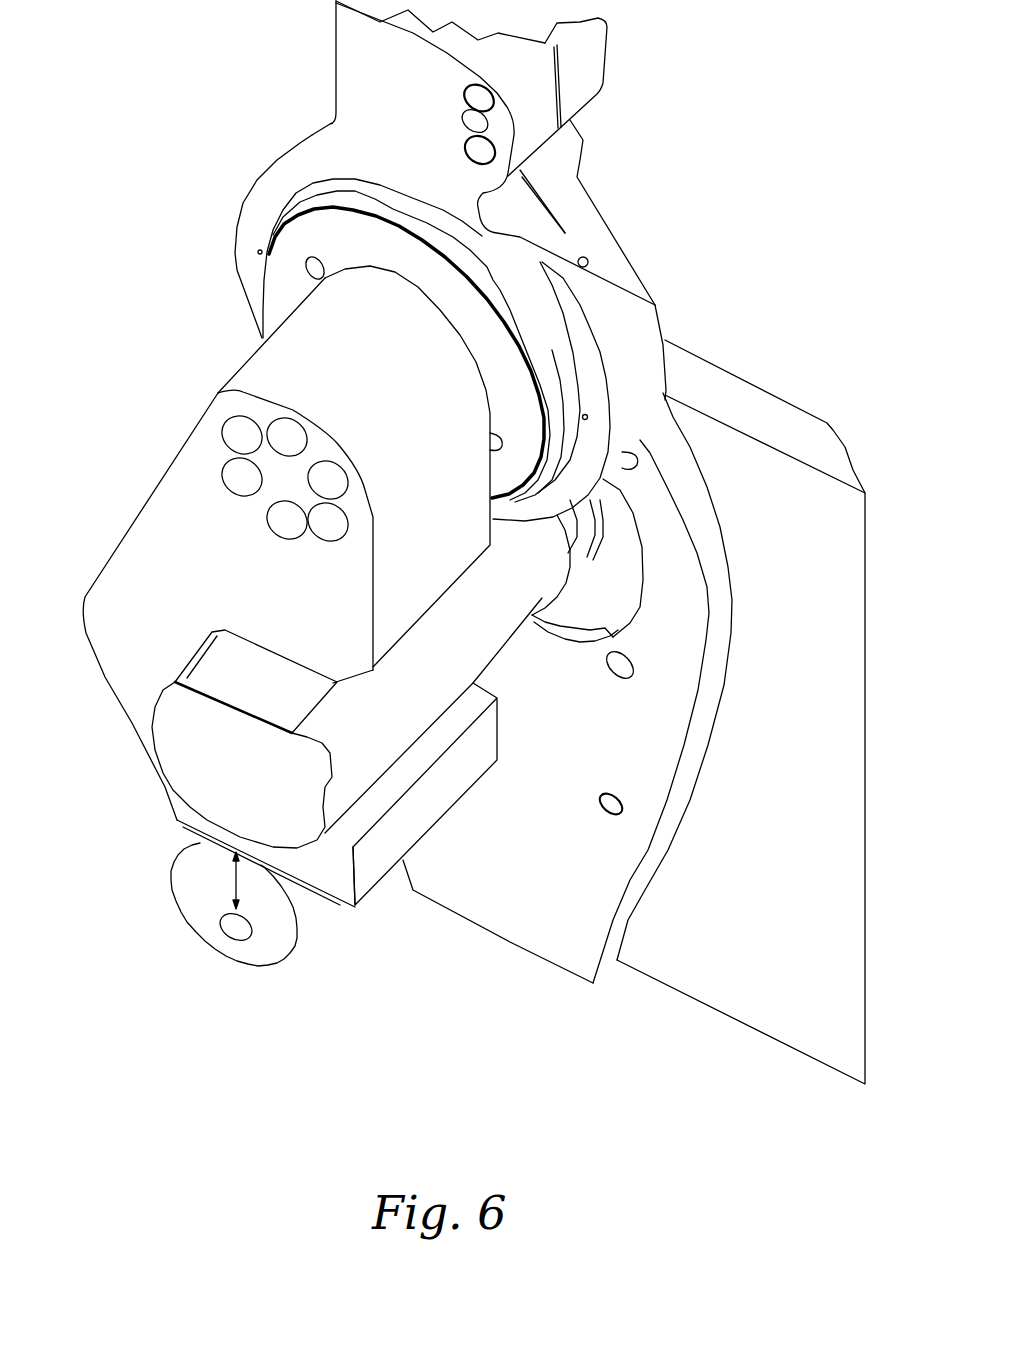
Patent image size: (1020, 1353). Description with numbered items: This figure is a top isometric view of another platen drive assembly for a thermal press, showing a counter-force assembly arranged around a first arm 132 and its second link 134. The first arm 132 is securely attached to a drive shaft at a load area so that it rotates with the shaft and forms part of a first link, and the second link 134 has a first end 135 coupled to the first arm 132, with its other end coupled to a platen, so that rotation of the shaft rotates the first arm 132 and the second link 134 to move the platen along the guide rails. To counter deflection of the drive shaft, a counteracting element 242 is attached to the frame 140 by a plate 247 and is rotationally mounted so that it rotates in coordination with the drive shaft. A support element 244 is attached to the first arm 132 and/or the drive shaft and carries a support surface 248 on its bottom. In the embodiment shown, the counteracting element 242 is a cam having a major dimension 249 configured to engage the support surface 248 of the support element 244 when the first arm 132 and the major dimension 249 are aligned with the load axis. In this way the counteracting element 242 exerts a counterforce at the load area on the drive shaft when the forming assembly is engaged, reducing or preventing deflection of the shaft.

The first arm 132 is at (168, 505).
The second link 134 is at (580, 87).
The first end 135 is at (527, 358).
The frame 140 is at (788, 422).
The counteracting element 242 is at (263, 948).
The support element 244 is at (330, 883).
The plate 247 is at (680, 688).
The support surface 248 is at (176, 814).
The major dimension 249 is at (235, 882).